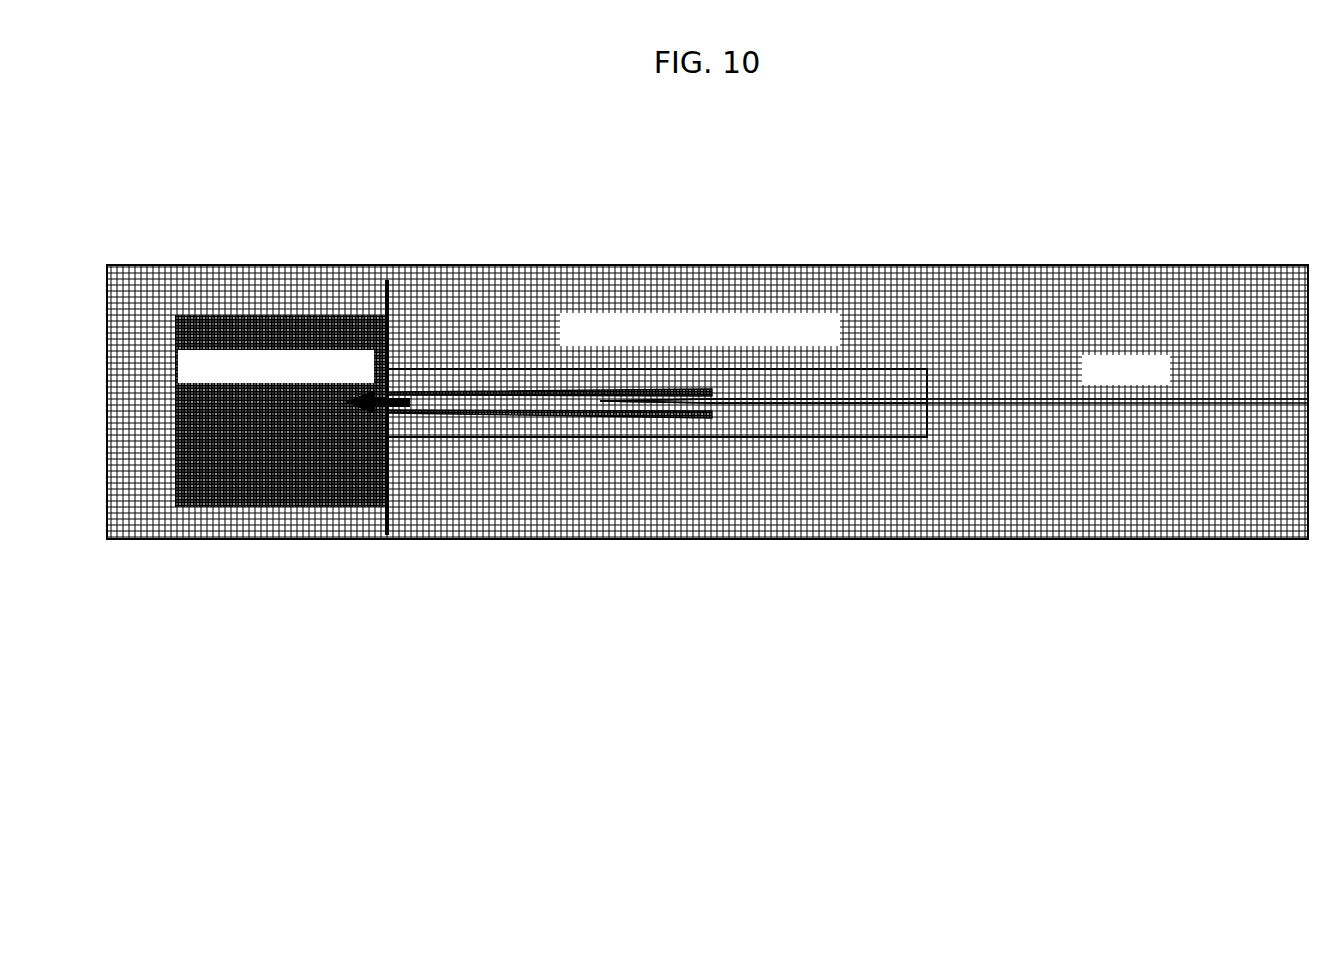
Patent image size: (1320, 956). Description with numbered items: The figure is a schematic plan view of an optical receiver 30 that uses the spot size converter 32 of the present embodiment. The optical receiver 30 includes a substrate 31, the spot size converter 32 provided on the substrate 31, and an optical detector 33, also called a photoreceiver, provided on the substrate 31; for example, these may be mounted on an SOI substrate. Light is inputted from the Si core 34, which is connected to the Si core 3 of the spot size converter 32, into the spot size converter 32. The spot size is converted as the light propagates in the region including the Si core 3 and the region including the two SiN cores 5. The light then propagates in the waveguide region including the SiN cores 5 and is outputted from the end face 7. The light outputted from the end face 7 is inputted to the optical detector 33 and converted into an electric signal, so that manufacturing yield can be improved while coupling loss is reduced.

The optical receiver 30 is at (900, 252).
The substrate 31 is at (212, 278).
The spot size converter 32 is at (560, 330).
The optical detector 33 is at (258, 490).
The Si core 34 is at (1207, 400).
The Si core 3 is at (816, 402).
The SiN cores 5 is at (508, 380).
The end face 7 is at (383, 431).